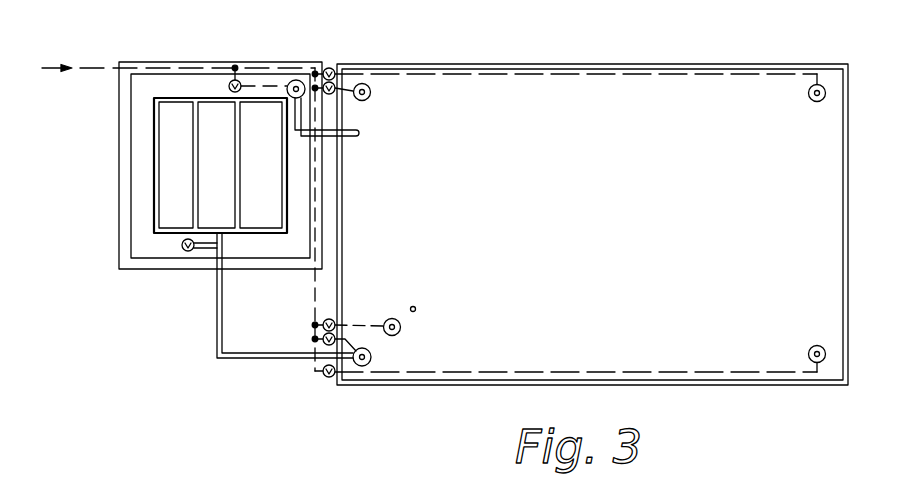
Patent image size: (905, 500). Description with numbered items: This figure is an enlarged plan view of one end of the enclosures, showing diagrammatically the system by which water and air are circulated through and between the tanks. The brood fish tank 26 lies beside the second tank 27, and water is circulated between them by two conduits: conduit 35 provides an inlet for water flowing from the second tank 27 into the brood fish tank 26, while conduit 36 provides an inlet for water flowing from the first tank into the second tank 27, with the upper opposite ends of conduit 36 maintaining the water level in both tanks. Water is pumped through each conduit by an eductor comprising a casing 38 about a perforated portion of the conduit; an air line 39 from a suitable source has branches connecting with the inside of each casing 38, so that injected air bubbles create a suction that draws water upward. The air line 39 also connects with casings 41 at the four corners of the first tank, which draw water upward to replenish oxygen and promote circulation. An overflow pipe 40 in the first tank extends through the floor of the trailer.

The brood fish tank 26 is at (583, 228).
The second tank 27 is at (143, 135).
The conduit 35 is at (213, 352).
The conduit 36 is at (328, 138).
The casing 38 is at (296, 80).
The line 39 is at (93, 67).
The overflow pipe 40 is at (416, 308).
The casings 41 is at (371, 94).